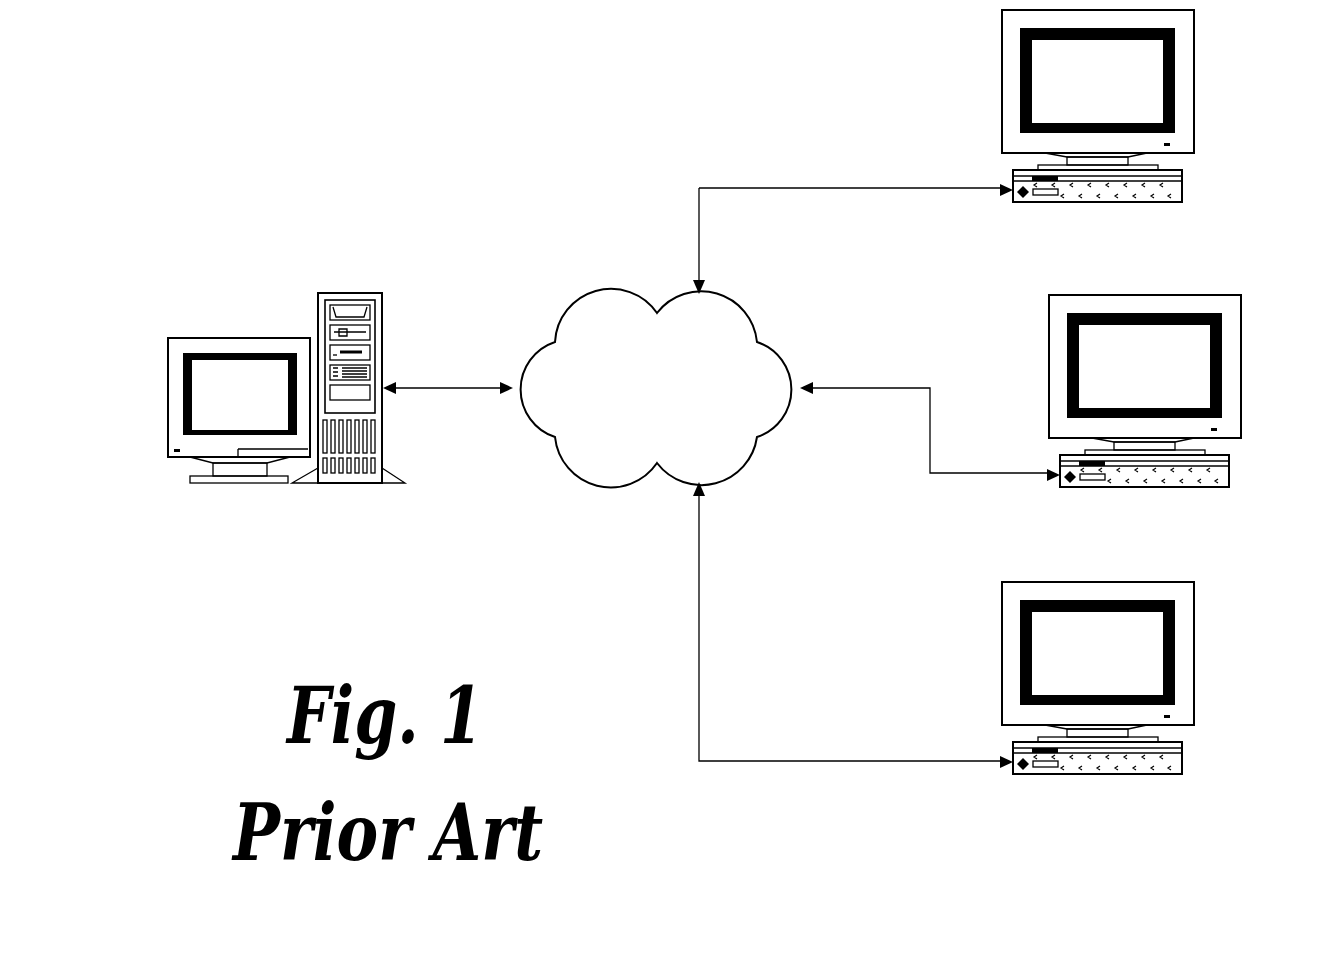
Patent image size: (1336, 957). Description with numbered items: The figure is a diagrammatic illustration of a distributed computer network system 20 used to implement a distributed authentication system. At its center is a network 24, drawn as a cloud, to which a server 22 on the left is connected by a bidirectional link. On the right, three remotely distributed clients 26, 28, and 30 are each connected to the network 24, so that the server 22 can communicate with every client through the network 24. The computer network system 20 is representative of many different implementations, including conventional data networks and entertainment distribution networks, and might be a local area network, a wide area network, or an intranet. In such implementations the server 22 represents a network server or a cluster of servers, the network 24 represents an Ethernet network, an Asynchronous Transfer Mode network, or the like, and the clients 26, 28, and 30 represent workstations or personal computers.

The distributed computer network system 20 is at (443, 79).
The server 22 is at (358, 292).
The network 24 is at (717, 342).
The client 26 is at (1195, 105).
The client 28 is at (1243, 390).
The client 30 is at (1193, 680).